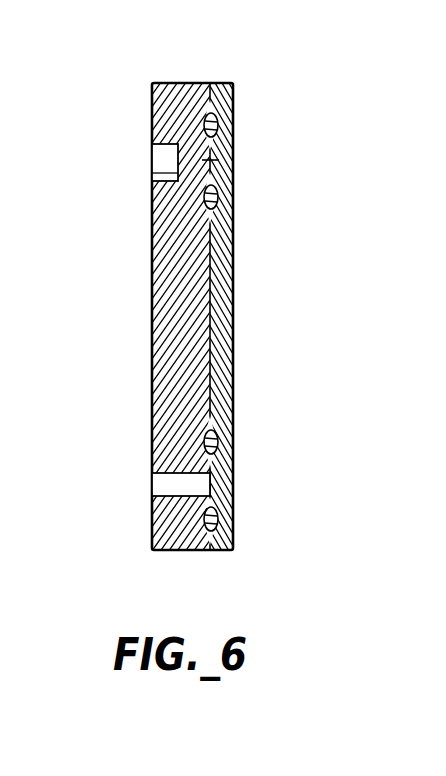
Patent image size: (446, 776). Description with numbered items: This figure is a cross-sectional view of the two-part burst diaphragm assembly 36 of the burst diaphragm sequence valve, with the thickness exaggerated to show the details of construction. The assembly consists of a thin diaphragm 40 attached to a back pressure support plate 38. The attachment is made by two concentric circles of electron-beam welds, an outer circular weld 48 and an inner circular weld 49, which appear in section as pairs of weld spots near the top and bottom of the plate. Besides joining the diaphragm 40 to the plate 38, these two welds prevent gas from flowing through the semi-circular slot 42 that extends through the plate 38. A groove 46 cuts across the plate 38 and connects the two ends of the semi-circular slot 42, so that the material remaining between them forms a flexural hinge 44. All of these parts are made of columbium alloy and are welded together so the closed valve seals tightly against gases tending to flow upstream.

The burst diaphragm assembly 36 is at (166, 317).
The back pressure support plate 38 is at (157, 83).
The thin diaphragm 40 is at (226, 83).
The semi-circular slot 42 is at (162, 483).
The flexural hinge 44 is at (212, 160).
The groove 46 is at (162, 161).
The outer circular weld 48 is at (215, 124).
The inner circular weld 49 is at (215, 197).